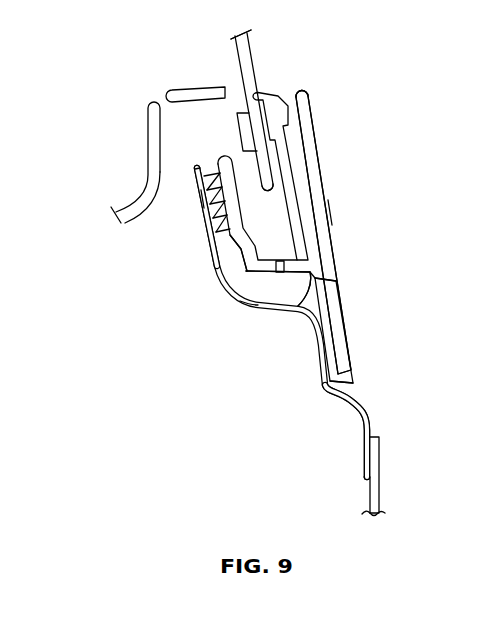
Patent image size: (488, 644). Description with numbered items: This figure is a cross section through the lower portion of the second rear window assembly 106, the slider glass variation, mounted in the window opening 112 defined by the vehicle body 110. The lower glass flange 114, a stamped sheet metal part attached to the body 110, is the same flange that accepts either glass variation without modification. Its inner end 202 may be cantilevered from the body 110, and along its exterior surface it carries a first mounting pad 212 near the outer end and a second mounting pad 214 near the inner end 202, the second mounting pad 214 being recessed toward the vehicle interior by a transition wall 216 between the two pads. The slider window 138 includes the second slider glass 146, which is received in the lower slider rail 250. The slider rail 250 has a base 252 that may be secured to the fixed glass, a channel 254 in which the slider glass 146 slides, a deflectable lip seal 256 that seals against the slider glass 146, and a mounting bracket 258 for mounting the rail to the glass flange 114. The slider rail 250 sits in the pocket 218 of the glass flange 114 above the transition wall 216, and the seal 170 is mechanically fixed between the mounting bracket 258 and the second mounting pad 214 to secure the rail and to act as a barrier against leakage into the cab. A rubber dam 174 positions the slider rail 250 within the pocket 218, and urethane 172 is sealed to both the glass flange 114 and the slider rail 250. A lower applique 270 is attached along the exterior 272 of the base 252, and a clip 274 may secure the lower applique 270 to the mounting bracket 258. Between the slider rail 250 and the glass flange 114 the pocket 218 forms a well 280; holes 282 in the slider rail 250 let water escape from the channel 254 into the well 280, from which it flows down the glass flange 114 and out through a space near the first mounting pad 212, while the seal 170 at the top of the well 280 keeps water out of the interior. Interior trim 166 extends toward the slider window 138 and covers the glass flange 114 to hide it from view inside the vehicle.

The second rear window assembly 106 is at (380, 45).
The body 110 is at (373, 497).
The window opening 112 is at (416, 351).
The glass flange 114 is at (247, 316).
The slider window 138 is at (343, 132).
The second slider glass 146 is at (247, 57).
The interior trim 166 is at (152, 172).
The seal 170 is at (192, 200).
The urethane 172 is at (205, 192).
The rubber dam 174 is at (224, 263).
The inner end 202 is at (197, 167).
The first mounting pad 212 is at (326, 343).
The second mounting pad 214 is at (228, 218).
The transition wall 216 is at (276, 309).
The pocket 218 is at (266, 268).
The slider rail 250 is at (305, 205).
The base 252 is at (288, 123).
The channel 254 is at (287, 222).
The lip seal 256 is at (257, 94).
The mounting bracket 258 is at (231, 217).
The lower applique 270 is at (314, 282).
The exterior 272 is at (316, 256).
The clip 274 is at (296, 312).
The well 280 is at (238, 296).
The holes 282 is at (254, 285).